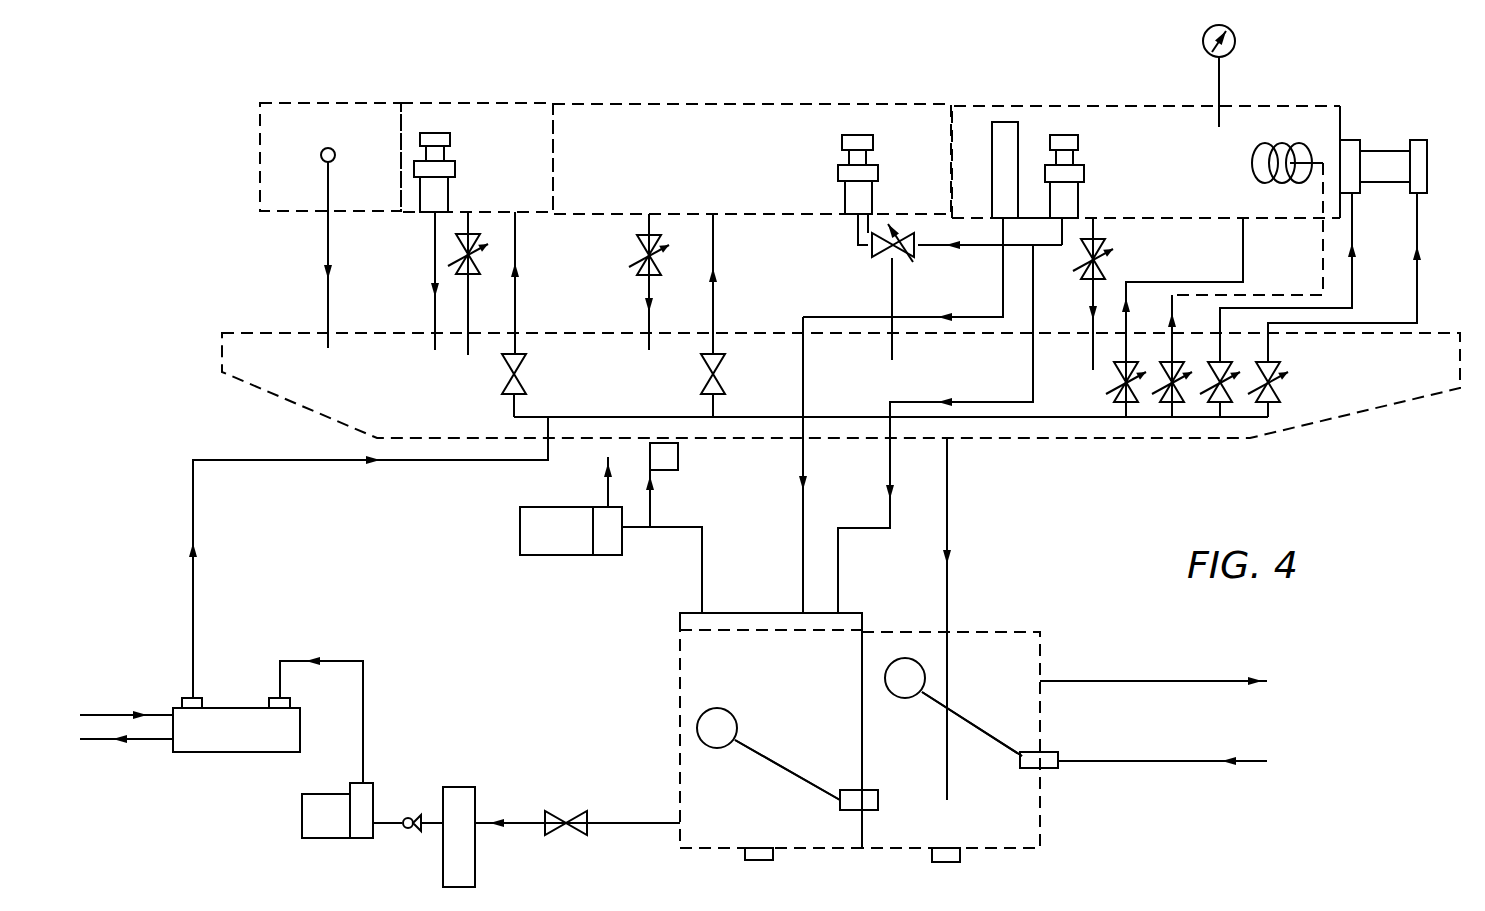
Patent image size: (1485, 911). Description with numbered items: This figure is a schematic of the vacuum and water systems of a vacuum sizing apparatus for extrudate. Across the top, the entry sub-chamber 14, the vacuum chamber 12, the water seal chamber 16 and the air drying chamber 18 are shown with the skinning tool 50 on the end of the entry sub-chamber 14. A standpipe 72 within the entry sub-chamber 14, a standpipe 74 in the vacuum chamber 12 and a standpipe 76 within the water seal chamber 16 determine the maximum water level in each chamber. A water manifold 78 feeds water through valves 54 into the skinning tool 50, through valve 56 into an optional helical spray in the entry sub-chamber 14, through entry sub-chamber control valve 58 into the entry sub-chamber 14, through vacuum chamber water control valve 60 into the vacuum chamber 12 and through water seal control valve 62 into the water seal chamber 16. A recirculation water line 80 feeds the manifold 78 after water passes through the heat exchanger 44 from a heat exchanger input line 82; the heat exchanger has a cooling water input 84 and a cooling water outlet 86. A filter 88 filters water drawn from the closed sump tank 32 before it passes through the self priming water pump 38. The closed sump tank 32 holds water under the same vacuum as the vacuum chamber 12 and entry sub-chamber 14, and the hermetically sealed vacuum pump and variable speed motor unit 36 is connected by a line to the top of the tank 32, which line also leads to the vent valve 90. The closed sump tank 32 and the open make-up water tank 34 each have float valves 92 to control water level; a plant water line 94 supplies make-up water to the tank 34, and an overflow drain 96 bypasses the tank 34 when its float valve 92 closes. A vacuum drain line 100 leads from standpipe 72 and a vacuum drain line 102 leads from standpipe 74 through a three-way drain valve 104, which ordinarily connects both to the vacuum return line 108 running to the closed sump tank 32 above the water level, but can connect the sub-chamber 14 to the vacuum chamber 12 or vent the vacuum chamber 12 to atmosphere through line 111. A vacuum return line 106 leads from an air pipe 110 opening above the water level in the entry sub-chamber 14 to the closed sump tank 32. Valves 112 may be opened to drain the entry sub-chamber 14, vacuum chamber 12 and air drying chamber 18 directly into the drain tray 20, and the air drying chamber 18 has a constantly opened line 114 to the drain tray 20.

The vacuum chamber 12 is at (682, 155).
The entry sub-chamber 14 is at (1190, 185).
The water seal chamber 16 is at (518, 171).
The air drying chamber 18 is at (318, 138).
The drain tray 20 is at (1443, 352).
The closed sump water tank 32 is at (788, 695).
The make-up water tank 34 is at (1010, 685).
The hermetically sealed vacuum pump and variable speed motor unit 36 is at (565, 546).
The self priming water pump 38 is at (323, 826).
The heat exchanger 44 is at (248, 745).
The skinning tool 50 is at (1384, 148).
The valves 54 is at (1224, 393).
The valve 56 is at (1175, 393).
The entry sub-chamber control valve 58 is at (1120, 397).
The vacuum chamber water control valve 60 is at (726, 368).
The water seal control valve 62 is at (518, 360).
The standpipe 72 is at (1075, 192).
The standpipe 74 is at (850, 196).
The standpipe 76 is at (445, 136).
The water manifold 78 is at (1008, 418).
The recirculation water line 80 is at (432, 464).
The heat exchanger input line 82 is at (363, 680).
The cooling water input 84 is at (112, 714).
The heat exchanger cooling water outlet 86 is at (100, 742).
The filter 88 is at (475, 850).
The vent valve 90 is at (680, 457).
The float valves 92 is at (755, 757).
The plant water line 94 is at (1130, 763).
The overflow drain 96 is at (1172, 680).
The vacuum drain line 100 is at (1043, 247).
The vacuum drain line 102 is at (856, 228).
The three-way drain valve 104 is at (905, 255).
The vacuum return line 106 is at (806, 385).
The vacuum return line 108 is at (1033, 355).
The air pipe 110 is at (1007, 128).
The line 111 is at (890, 292).
The valves 112 is at (472, 275).
The constantly opened line 114 is at (326, 231).